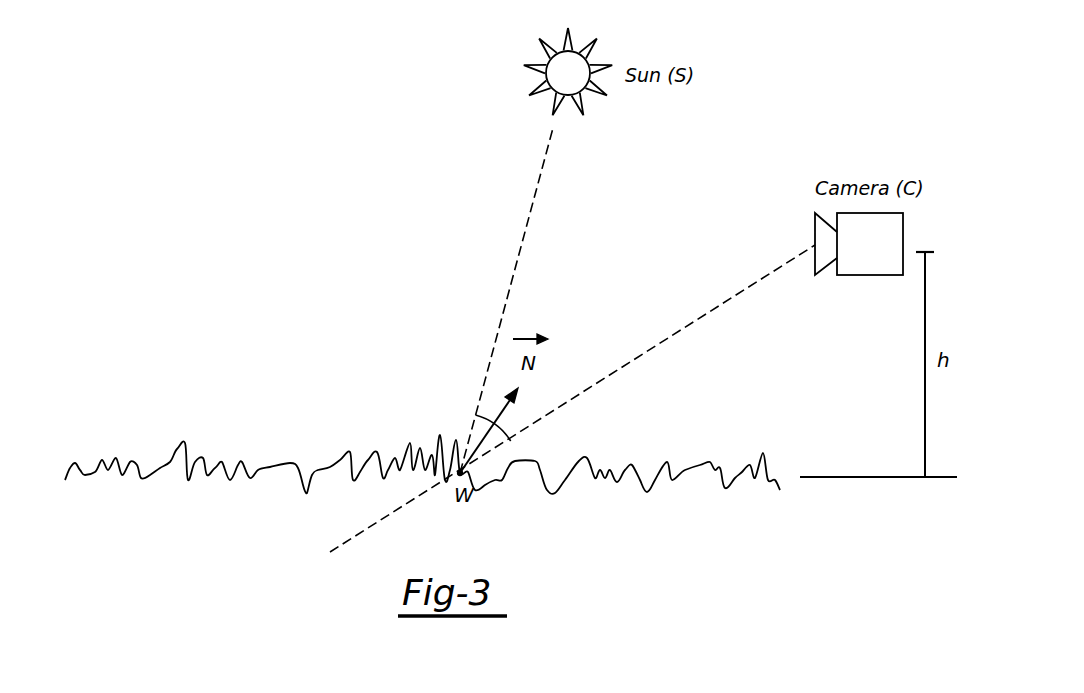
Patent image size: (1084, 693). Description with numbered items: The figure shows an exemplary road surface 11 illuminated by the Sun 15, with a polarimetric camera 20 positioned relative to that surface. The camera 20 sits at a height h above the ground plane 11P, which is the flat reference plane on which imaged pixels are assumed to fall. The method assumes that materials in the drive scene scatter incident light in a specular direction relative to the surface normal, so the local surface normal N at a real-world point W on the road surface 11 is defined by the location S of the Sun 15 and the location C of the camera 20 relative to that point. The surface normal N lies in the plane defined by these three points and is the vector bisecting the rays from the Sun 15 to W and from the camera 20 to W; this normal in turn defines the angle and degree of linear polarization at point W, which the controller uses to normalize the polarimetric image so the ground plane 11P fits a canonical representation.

The road surface 11 is at (680, 462).
The ground plane 11P is at (838, 476).
The Sun 15 is at (556, 89).
The camera 20 is at (870, 275).